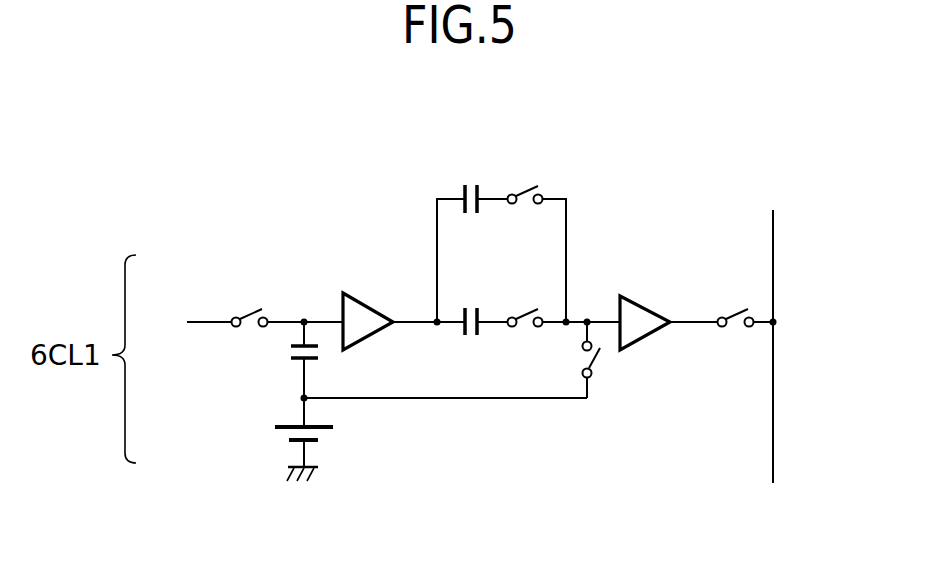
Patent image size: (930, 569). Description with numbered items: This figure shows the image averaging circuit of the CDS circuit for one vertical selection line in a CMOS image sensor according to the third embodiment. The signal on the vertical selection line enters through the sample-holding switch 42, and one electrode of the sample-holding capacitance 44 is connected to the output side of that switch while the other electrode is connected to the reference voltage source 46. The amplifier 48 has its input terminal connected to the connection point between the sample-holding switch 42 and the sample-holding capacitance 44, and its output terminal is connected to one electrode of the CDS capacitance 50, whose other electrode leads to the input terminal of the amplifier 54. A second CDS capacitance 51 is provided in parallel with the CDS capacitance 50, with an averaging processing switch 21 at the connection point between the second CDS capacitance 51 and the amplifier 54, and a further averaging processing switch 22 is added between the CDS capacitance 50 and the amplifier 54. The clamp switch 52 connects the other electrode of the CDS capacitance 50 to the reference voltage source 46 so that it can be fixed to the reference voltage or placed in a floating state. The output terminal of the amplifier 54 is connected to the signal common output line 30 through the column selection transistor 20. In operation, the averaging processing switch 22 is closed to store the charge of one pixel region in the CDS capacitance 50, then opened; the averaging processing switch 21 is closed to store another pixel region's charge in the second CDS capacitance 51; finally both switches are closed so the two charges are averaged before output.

The column selection transistor 20 is at (737, 307).
The averaging processing switch 21 is at (532, 182).
The averaging processing switch 22 is at (531, 306).
The signal common output line 30 is at (775, 259).
The sample-holding switch 42 is at (254, 301).
The sample-holding capacitance 44 is at (323, 357).
The reference voltage source 46 is at (323, 437).
The amplifier 48 is at (370, 302).
The CDS capacitance 50 is at (472, 306).
The second CDS capacitance 51 is at (472, 183).
The clamp switch 52 is at (597, 369).
The amplifier 54 is at (645, 305).